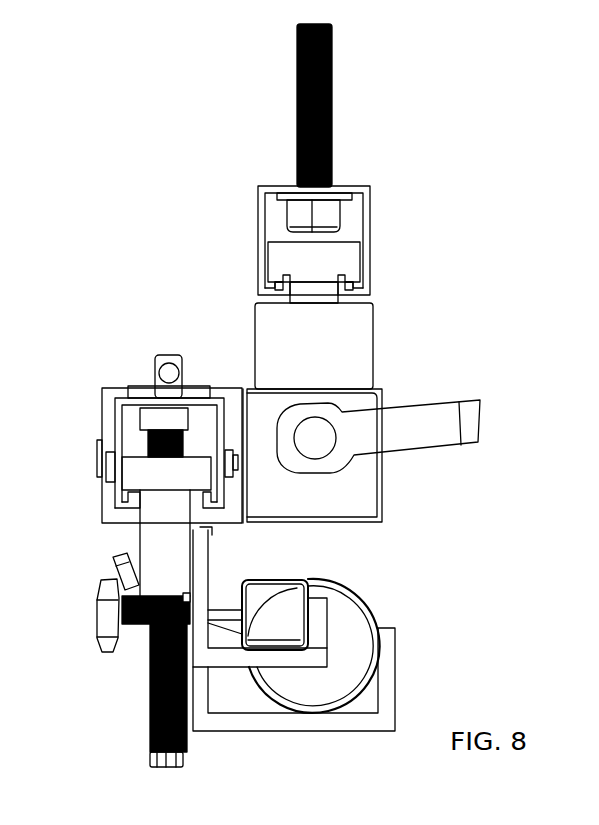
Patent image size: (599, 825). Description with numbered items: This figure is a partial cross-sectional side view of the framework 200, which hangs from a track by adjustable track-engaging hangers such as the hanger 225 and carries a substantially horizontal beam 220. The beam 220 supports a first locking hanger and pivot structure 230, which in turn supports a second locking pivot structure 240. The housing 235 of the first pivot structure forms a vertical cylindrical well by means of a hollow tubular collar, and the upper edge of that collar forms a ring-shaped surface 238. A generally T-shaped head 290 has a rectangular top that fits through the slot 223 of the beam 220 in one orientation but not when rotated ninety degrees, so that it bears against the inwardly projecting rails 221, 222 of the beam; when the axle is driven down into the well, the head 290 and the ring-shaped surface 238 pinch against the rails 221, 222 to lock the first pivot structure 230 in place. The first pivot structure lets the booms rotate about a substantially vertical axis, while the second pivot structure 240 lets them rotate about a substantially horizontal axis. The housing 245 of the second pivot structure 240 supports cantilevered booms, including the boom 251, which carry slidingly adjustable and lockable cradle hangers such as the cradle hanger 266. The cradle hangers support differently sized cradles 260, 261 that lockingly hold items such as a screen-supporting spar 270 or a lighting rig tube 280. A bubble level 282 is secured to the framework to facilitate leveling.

The framework 200 is at (146, 191).
The substantially horizontal beam 220 is at (365, 202).
The inwardly projecting rail 221 is at (275, 282).
The inwardly projecting rail 222 is at (347, 282).
The slot 223 is at (288, 293).
The adjustable track-engaging hanger 225 is at (337, 90).
The first locking hanger and pivot structure 230 is at (434, 358).
The housing 235 is at (378, 492).
The ring-shaped surface 238 is at (368, 298).
The second locking pivot structure 240 is at (78, 398).
The housing 245 is at (100, 508).
The cantilevered boom 251 is at (117, 399).
The cradle 260 is at (397, 668).
The cradle 261 is at (203, 550).
The cradle hanger 266 is at (143, 541).
The screen-supporting spar 270 is at (290, 577).
The lighting rig tube 280 is at (358, 608).
The bubble level 282 is at (161, 355).
The T-shaped head 290 is at (350, 257).